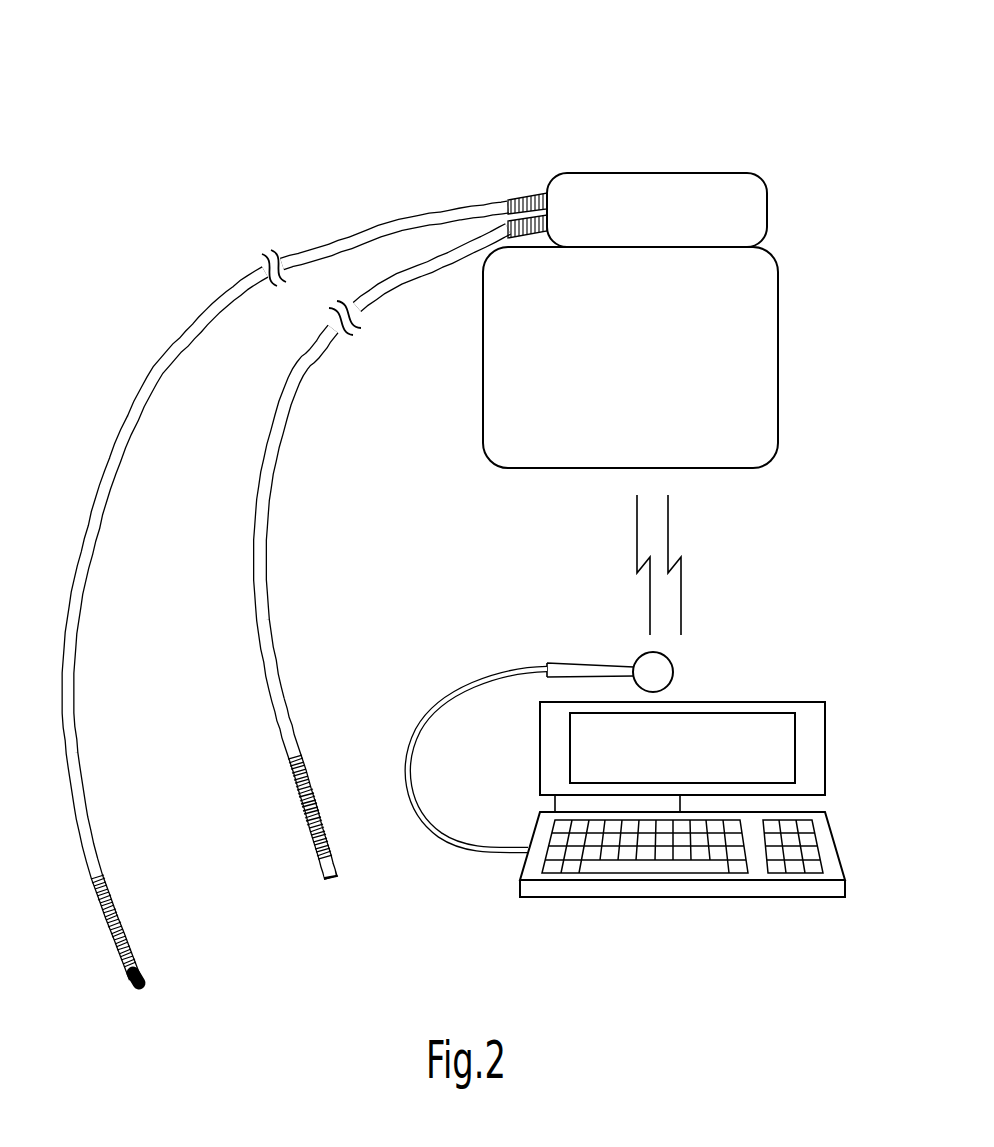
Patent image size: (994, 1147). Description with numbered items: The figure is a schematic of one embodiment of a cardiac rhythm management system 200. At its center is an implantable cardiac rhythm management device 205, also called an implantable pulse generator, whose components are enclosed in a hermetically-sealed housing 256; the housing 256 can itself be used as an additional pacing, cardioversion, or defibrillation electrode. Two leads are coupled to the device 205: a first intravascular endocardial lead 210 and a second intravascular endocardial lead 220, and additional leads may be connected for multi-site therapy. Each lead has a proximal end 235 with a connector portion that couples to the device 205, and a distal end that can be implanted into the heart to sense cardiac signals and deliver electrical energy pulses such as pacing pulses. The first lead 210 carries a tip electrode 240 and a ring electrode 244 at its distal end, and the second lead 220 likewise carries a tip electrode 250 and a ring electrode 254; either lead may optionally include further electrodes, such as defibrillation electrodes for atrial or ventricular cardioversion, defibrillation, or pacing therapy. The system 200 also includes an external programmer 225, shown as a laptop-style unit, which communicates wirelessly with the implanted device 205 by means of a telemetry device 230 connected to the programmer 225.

The cardiac rhythm management system 200 is at (345, 72).
The implantable cardiac rhythm management device 205 is at (779, 354).
The first intravascular endocardial lead 210 is at (120, 430).
The second intravascular endocardial lead 220 is at (285, 445).
The external programmer 225 is at (833, 837).
The telemetry device 230 is at (608, 667).
The proximal end 235 is at (503, 222).
The tip electrode 240 is at (143, 985).
The ring electrode 244 is at (112, 943).
The tip electrode 250 is at (331, 881).
The ring electrode 254 is at (300, 818).
The hermetically-sealed housing 256 is at (565, 469).